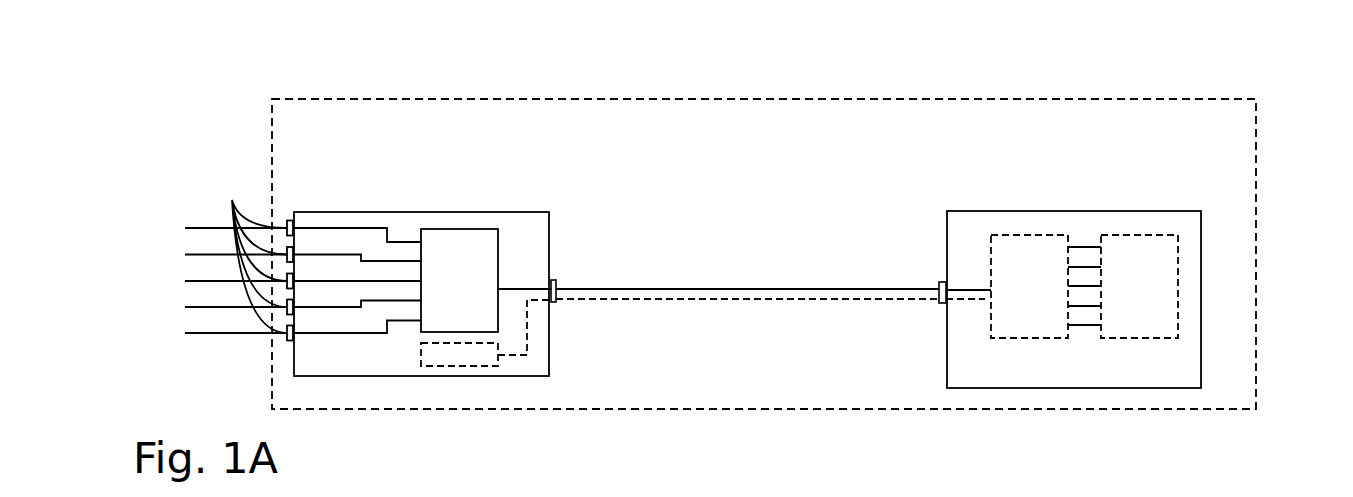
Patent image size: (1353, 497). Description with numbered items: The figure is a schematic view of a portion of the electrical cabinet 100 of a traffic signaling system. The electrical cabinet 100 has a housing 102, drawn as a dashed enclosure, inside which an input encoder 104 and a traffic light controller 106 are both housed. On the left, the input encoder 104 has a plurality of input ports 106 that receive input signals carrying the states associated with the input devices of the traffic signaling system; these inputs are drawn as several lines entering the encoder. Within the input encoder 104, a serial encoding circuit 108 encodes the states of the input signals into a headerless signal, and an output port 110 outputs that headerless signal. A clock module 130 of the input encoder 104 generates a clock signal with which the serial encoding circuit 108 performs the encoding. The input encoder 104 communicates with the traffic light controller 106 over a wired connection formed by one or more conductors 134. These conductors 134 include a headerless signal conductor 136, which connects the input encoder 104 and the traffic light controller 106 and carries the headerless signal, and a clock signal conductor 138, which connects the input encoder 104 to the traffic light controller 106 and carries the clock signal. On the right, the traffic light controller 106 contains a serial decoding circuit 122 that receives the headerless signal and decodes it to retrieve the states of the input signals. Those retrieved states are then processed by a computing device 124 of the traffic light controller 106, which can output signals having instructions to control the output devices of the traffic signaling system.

The electrical cabinet 100 is at (236, 102).
The housing 102 is at (722, 98).
The input encoder 104 is at (403, 212).
The traffic light controller 106 is at (1027, 150).
The serial encoding circuit 108 is at (485, 229).
The output port 110 is at (553, 280).
The serial decoding circuit 122 is at (1028, 233).
The computing device 124 is at (1180, 262).
The clock module 130 is at (461, 370).
The conductors 134 is at (713, 216).
The headerless signal conductor 136 is at (720, 288).
The clock signal conductor 138 is at (748, 300).